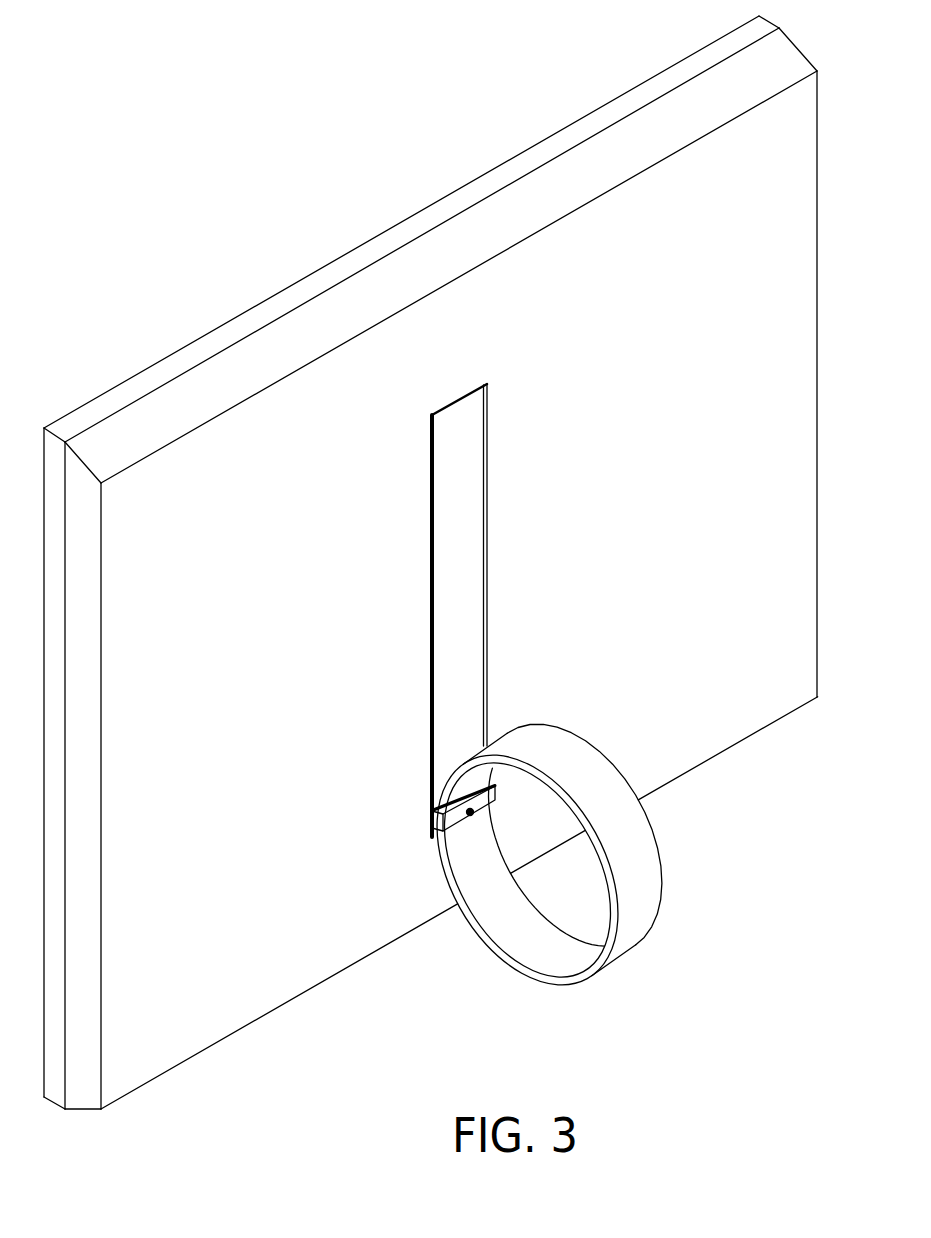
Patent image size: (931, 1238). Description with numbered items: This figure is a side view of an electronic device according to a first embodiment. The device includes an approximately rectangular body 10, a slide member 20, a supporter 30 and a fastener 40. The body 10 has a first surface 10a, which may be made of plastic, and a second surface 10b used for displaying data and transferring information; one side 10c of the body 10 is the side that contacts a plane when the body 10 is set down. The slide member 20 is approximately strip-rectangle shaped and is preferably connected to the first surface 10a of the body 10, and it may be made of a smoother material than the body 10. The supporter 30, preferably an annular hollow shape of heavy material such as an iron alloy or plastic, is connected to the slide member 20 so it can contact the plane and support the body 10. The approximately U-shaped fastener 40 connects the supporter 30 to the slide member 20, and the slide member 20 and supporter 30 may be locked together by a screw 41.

The body 10 is at (431, 562).
The first surface 10a is at (333, 389).
The second surface 10b is at (157, 360).
The side 10c is at (238, 1033).
The slide member 20 is at (467, 494).
The supporter 30 is at (639, 893).
The fastener 40 is at (460, 817).
The screw 41 is at (467, 807).